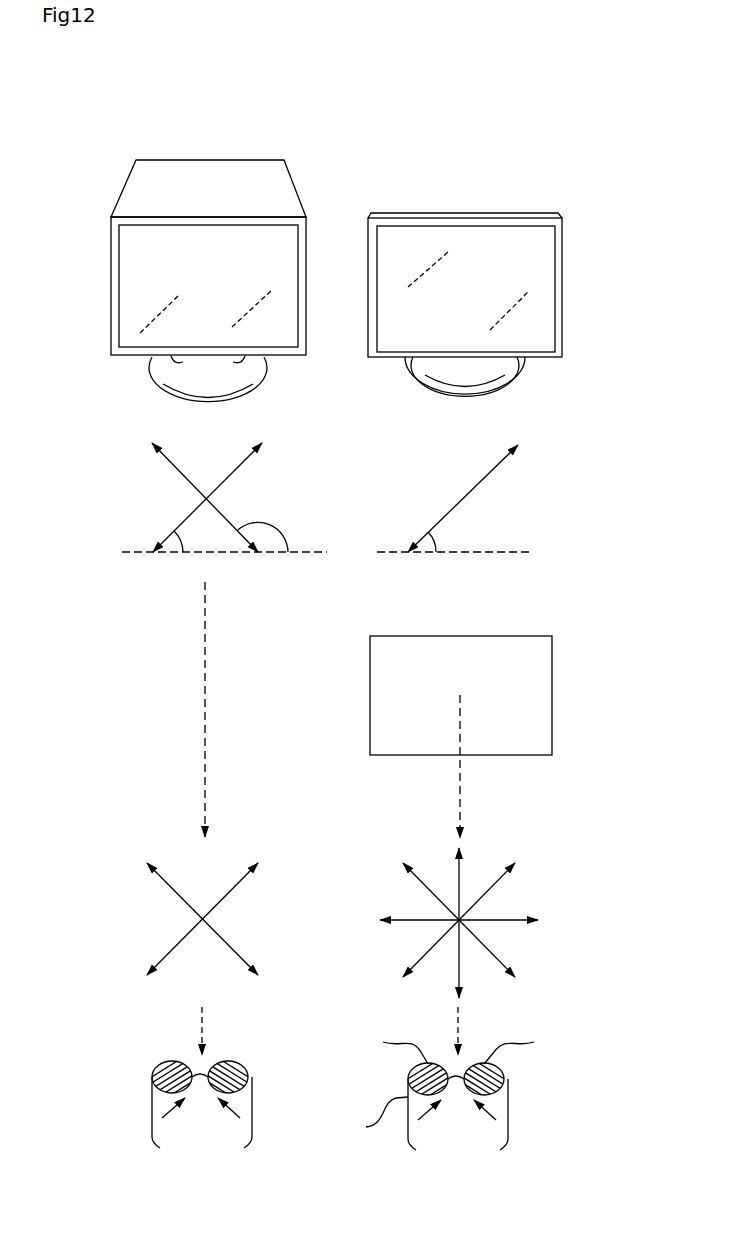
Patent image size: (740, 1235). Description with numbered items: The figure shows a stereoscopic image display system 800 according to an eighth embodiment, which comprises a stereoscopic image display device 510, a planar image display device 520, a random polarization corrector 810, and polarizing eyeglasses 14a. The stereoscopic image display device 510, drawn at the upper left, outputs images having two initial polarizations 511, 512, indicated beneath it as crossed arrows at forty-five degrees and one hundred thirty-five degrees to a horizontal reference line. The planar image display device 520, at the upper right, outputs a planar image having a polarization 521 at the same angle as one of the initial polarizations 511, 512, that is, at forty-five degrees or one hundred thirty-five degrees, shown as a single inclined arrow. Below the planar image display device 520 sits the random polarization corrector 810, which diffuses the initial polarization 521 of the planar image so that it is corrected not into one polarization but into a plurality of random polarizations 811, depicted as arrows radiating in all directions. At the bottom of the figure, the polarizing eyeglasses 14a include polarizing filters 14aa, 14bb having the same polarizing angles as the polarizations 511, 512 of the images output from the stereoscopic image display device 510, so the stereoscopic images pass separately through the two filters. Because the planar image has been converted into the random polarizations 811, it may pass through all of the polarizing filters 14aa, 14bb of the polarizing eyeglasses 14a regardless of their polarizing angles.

The stereoscopic image display system 800 is at (89, 86).
The stereoscopic image display device 510 is at (208, 160).
The planar image display device 520 is at (466, 213).
The initial polarization 511 is at (235, 527).
The initial polarization 512 is at (175, 528).
The polarization 521 is at (430, 528).
The random polarization corrector 810 is at (552, 705).
The random polarizations 811 is at (542, 883).
The polarizing eyeglasses 14a is at (199, 1089).
The polarizing filter 14aa is at (172, 1062).
The polarizing filter 14bb is at (228, 1062).